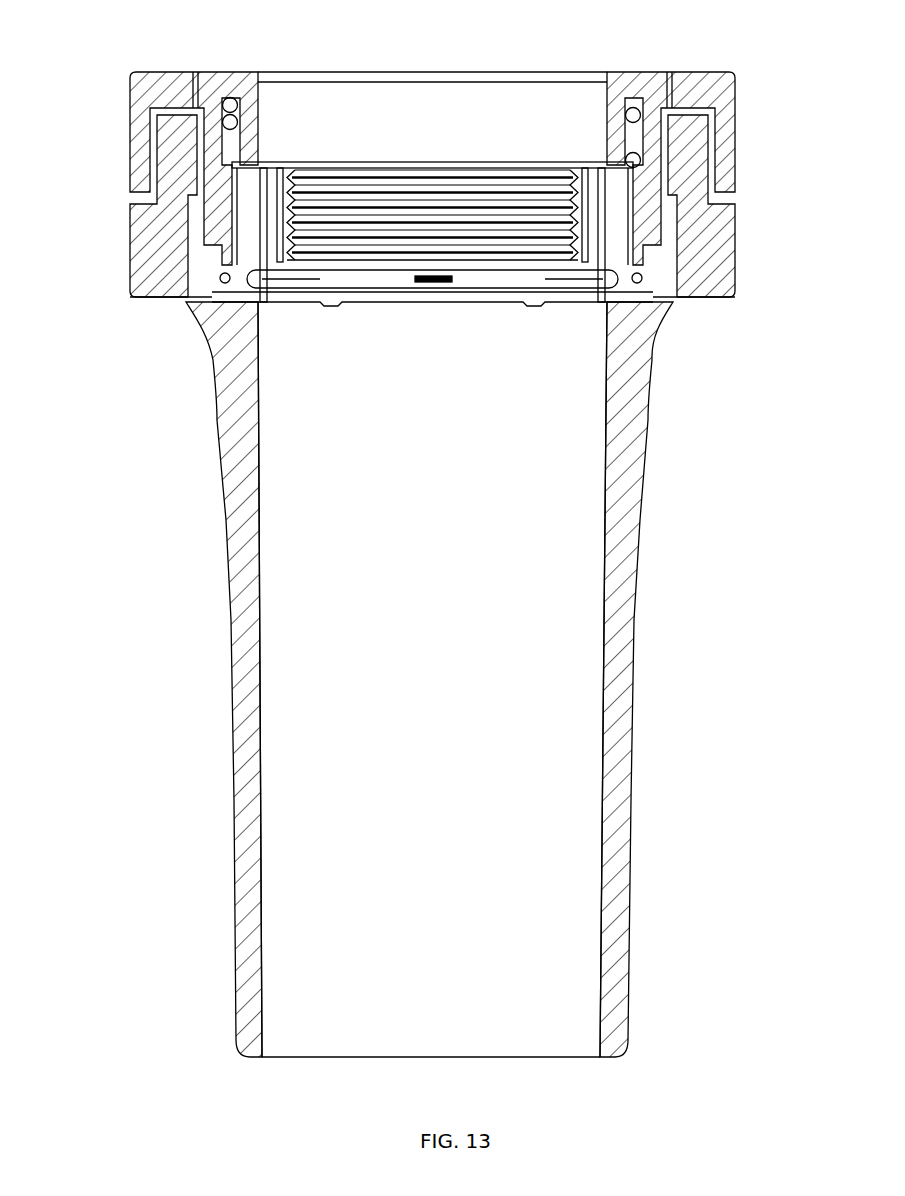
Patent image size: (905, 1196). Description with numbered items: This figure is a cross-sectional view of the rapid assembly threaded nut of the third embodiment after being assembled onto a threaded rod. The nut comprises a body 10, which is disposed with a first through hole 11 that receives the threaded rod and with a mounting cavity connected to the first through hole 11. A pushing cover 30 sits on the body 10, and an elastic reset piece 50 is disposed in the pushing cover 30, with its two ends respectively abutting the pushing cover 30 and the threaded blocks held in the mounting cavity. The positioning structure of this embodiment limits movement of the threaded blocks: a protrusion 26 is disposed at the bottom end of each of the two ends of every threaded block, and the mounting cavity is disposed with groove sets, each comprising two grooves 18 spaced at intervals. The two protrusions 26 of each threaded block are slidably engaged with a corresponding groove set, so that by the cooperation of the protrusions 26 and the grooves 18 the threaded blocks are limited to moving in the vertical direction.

The body 10 is at (618, 850).
The first through hole 11 is at (545, 603).
The groove 18 is at (648, 268).
The protrusion 26 is at (217, 268).
The pushing cover 30 is at (648, 92).
The elastic reset piece 50 is at (230, 122).